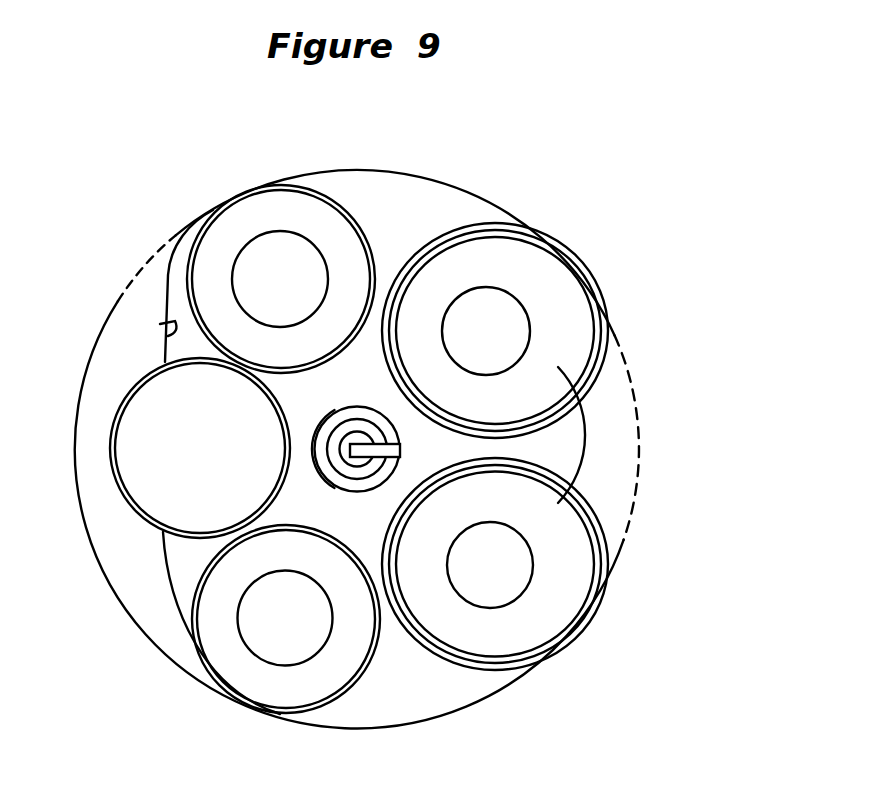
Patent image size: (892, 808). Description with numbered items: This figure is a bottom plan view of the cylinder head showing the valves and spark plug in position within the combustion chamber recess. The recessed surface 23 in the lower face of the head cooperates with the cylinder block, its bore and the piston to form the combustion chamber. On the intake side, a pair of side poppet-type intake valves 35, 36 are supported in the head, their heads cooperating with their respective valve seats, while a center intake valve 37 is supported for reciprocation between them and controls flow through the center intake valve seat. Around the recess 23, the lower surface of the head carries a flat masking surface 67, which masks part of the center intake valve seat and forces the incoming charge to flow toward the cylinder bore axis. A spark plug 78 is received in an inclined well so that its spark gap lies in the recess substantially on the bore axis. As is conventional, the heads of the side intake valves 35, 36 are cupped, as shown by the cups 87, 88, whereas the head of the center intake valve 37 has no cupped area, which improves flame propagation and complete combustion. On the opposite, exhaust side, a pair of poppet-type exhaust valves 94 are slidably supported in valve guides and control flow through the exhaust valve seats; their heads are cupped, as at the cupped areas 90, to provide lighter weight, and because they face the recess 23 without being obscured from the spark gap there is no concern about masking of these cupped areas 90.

The recessed surface 23 is at (475, 693).
The side intake valve 35 is at (208, 278).
The side intake valve 36 is at (213, 607).
The center intake valve 37 is at (143, 472).
The flat masking surface 67 is at (165, 323).
The spark plug 78 is at (377, 490).
The cup 87 is at (270, 267).
The cup 88 is at (267, 635).
The cupped area 90 is at (508, 320).
The exhaust valve 94 is at (549, 507).